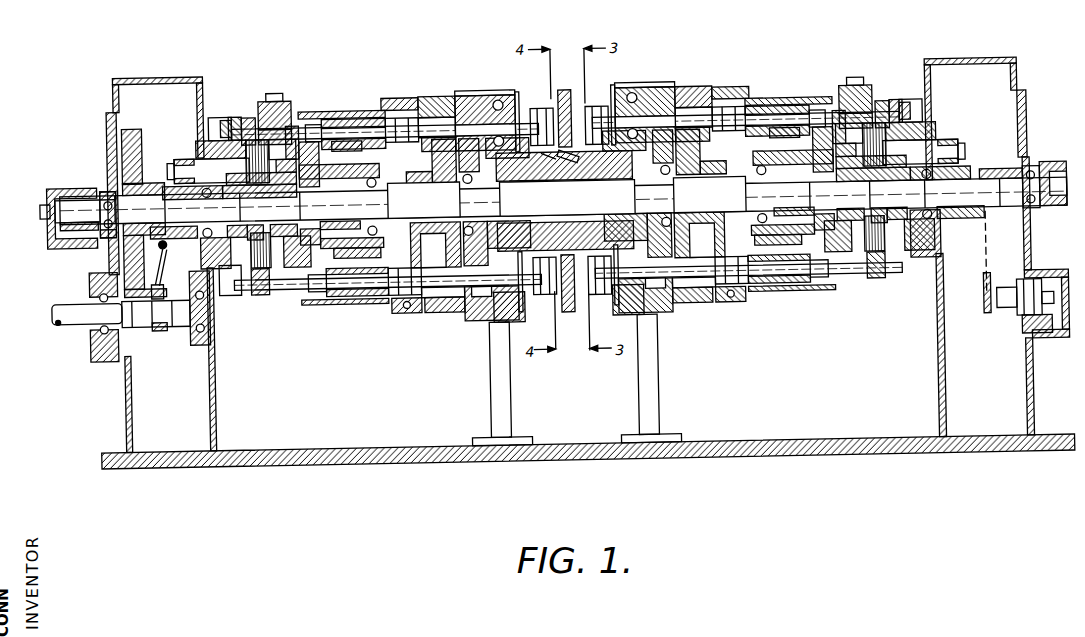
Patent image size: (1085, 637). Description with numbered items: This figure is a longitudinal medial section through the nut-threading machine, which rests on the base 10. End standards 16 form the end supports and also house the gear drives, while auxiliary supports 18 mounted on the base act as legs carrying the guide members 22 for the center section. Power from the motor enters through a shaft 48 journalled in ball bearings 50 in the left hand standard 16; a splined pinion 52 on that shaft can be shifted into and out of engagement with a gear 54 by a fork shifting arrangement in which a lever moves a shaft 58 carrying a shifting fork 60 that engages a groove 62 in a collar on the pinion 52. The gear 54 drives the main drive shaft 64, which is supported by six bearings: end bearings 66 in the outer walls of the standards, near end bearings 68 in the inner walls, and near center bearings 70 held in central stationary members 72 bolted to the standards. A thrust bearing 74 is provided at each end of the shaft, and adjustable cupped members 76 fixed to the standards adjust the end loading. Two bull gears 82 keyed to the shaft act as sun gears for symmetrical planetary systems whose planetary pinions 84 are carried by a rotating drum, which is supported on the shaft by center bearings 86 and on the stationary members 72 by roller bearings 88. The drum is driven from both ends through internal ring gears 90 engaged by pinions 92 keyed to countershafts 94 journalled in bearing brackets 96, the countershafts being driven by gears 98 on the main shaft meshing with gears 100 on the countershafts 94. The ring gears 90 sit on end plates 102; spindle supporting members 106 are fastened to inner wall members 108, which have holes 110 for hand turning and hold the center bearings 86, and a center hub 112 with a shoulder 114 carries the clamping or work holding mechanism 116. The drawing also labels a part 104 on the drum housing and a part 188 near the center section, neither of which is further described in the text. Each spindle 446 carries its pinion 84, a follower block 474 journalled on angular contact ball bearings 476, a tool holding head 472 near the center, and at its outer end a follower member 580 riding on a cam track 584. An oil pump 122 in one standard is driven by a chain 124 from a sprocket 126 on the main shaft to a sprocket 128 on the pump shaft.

The base 10 is at (311, 453).
The end standards 16 is at (128, 79).
The auxiliary supports 18 is at (507, 399).
The guide members 22 is at (505, 330).
The shaft 48 is at (73, 322).
The ball bearings 50 is at (100, 358).
The pinion 52 is at (137, 330).
The gear 54 is at (108, 135).
The shaft 58 is at (166, 248).
The shifting fork 60 is at (162, 290).
The groove 62 is at (158, 332).
The main drive shaft 64 is at (123, 185).
The end bearings 66 is at (100, 200).
The near end bearings 68 is at (160, 264).
The near center bearings 70 is at (62, 236).
The central stationary members 72 is at (325, 236).
The thrust bearing 74 is at (78, 206).
The adjustable cupped members 76 is at (47, 228).
The bull gears 82 is at (408, 319).
The planetary pinions 84 is at (440, 124).
The center bearings 86 is at (452, 103).
The roller bearings 88 is at (294, 130).
The internal ring gears 90 is at (249, 121).
The pinions 92 is at (236, 120).
The countershafts 94 is at (210, 143).
The bearing brackets 96 is at (218, 120).
The gears 98 is at (172, 188).
The gears 100 is at (185, 161).
The end plates 102 is at (274, 97).
The tube 104 is at (320, 116).
The spindle supporting members 106 is at (410, 104).
The inner wall members 108 is at (490, 103).
The holes 110 is at (478, 98).
The center hub 112 is at (618, 238).
The shoulder 114 is at (570, 226).
The clamping or work holding mechanism 116 is at (562, 175).
The oil pump 122 is at (1035, 351).
The chain 124 is at (988, 284).
The sprocket 126 is at (990, 192).
The sprocket 128 is at (983, 320).
The clutch disc 188 is at (544, 117).
The spindle 446 is at (400, 124).
The tool holding head 472 is at (596, 116).
The follower block 474 is at (352, 124).
The angular contact ball bearings 476 is at (338, 309).
The follower member 580 is at (258, 298).
The cam track 584 is at (224, 298).